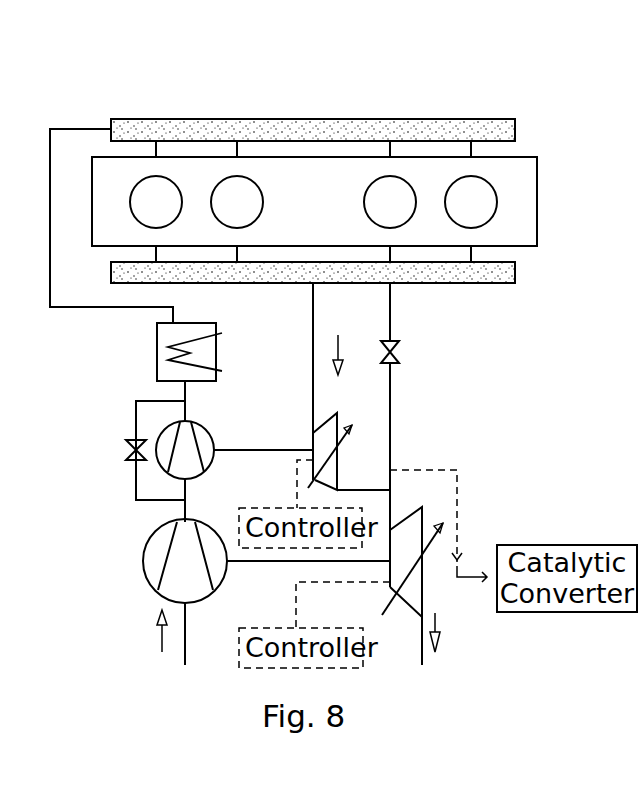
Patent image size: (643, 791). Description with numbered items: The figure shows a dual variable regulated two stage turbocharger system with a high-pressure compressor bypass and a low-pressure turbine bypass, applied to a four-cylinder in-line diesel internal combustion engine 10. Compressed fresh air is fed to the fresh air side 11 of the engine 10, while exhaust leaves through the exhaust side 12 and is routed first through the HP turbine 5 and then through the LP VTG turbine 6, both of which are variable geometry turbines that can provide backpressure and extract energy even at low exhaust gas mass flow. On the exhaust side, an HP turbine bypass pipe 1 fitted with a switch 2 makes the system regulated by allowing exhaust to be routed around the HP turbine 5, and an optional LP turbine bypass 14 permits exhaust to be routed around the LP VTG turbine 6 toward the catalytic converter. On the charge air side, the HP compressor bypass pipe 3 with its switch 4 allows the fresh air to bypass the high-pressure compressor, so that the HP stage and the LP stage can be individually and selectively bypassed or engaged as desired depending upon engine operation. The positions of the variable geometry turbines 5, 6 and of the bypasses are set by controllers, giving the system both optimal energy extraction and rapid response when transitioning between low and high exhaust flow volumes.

The HP turbine bypass pipe 1 is at (392, 308).
The switch 2 is at (400, 355).
The HP compressor bypass pipe 3 is at (147, 400).
The switch 4 is at (126, 450).
The HP turbine 5 is at (318, 435).
The LP VTG turbine 6 is at (392, 587).
The internal combustion engine 10 is at (471, 103).
The fresh air side 11 is at (310, 119).
The exhaust manifold 12 is at (515, 277).
The LP turbine bypass 14 is at (440, 470).